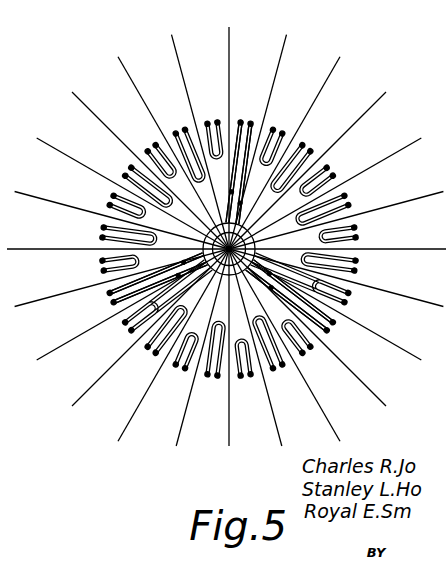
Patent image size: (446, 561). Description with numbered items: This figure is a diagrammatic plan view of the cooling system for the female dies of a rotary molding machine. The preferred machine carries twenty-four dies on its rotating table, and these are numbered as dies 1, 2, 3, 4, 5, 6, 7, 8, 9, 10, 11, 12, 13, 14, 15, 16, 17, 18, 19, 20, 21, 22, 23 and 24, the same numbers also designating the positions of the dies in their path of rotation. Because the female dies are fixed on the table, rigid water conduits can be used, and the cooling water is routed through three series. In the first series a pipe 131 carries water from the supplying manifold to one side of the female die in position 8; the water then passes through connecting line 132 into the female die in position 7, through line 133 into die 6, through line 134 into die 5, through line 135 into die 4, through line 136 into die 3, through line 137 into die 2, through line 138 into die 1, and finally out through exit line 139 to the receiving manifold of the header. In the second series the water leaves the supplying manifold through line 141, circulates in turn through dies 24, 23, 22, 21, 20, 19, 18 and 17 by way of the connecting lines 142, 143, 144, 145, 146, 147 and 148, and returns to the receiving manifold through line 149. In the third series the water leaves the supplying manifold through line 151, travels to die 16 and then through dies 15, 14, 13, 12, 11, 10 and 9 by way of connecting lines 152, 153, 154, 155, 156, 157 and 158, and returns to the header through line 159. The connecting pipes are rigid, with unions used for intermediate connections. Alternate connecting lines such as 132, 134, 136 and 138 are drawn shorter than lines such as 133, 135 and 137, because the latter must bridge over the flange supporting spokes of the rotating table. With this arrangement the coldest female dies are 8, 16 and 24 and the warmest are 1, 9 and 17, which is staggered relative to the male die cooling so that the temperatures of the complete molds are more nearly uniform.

The die 1 is at (258, 142).
The die 2 is at (284, 153).
The die 3 is at (307, 170).
The die 4 is at (325, 193).
The die 5 is at (336, 221).
The die 6 is at (337, 244).
The die 7 is at (336, 278).
The die 8 is at (325, 304).
The die 9 is at (307, 327).
The die 10 is at (284, 345).
The die 11 is at (255, 347).
The die 12 is at (230, 347).
The die 13 is at (202, 347).
The die 14 is at (173, 345).
The die 15 is at (150, 327).
The die 16 is at (133, 304).
The die 17 is at (122, 278).
The die 18 is at (118, 250).
The die 19 is at (122, 221).
The die 20 is at (133, 193).
The die 21 is at (150, 170).
The die 22 is at (173, 153).
The die 23 is at (201, 142).
The die 24 is at (227, 138).
The pipe 131 is at (334, 326).
The connecting line 132 is at (349, 300).
The line 133 is at (358, 265).
The line 134 is at (358, 228).
The line 135 is at (350, 205).
The line 136 is at (334, 174).
The line 137 is at (304, 146).
The line 138 is at (274, 128).
The exit line 139 is at (251, 120).
The line 141 is at (241, 118).
The connecting line 142 is at (208, 122).
The connecting line 143 is at (176, 132).
The connecting line 144 is at (148, 149).
The connecting line 145 is at (125, 174).
The connecting line 146 is at (110, 204).
The connecting line 147 is at (100, 238).
The connecting line 148 is at (100, 272).
The line 149 is at (108, 295).
The line 151 is at (112, 304).
The connecting line 152 is at (130, 334).
The connecting line 153 is at (155, 357).
The connecting line 154 is at (184, 372).
The connecting line 155 is at (213, 381).
The connecting line 156 is at (251, 380).
The connecting line 157 is at (283, 369).
The connecting line 158 is at (312, 352).
The line 159 is at (330, 334).